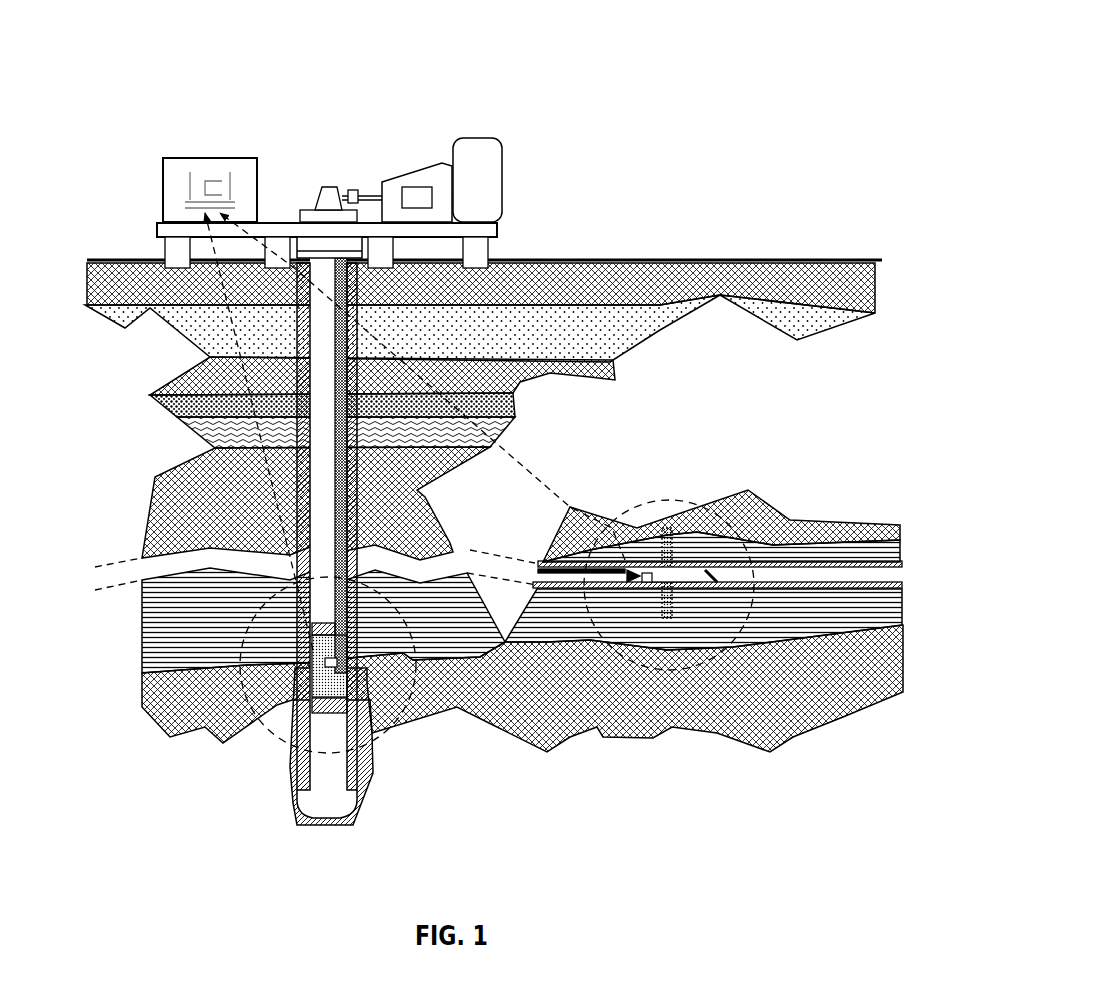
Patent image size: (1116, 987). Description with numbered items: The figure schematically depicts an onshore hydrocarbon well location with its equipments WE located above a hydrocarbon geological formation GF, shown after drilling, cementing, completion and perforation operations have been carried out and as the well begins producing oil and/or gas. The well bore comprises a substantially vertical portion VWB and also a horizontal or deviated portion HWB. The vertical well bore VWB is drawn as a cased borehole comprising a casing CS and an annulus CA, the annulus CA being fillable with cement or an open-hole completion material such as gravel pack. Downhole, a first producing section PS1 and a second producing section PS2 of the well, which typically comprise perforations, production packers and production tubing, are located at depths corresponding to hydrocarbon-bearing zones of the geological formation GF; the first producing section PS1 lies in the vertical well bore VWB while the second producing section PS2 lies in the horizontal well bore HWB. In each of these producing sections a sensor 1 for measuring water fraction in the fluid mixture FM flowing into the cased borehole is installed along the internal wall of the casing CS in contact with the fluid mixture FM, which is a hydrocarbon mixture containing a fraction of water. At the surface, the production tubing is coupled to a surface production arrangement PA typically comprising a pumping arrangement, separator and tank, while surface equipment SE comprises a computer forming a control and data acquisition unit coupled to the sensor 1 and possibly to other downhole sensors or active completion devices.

The well location equipments WE is at (265, 112).
The surface equipment SE is at (168, 178).
The surface production arrangement PA is at (418, 166).
The annulus CA is at (297, 340).
The vertical portion of the well bore VWB is at (309, 428).
The hydrocarbon geological formation GF is at (147, 477).
The casing CS is at (297, 532).
The first producing section PS1 is at (312, 667).
The second producing section PS2 is at (677, 500).
The fluid mixture FM is at (343, 685).
The horizontal or deviated portion of the well bore HWB is at (597, 592).
The sensor 1 is at (293, 747).